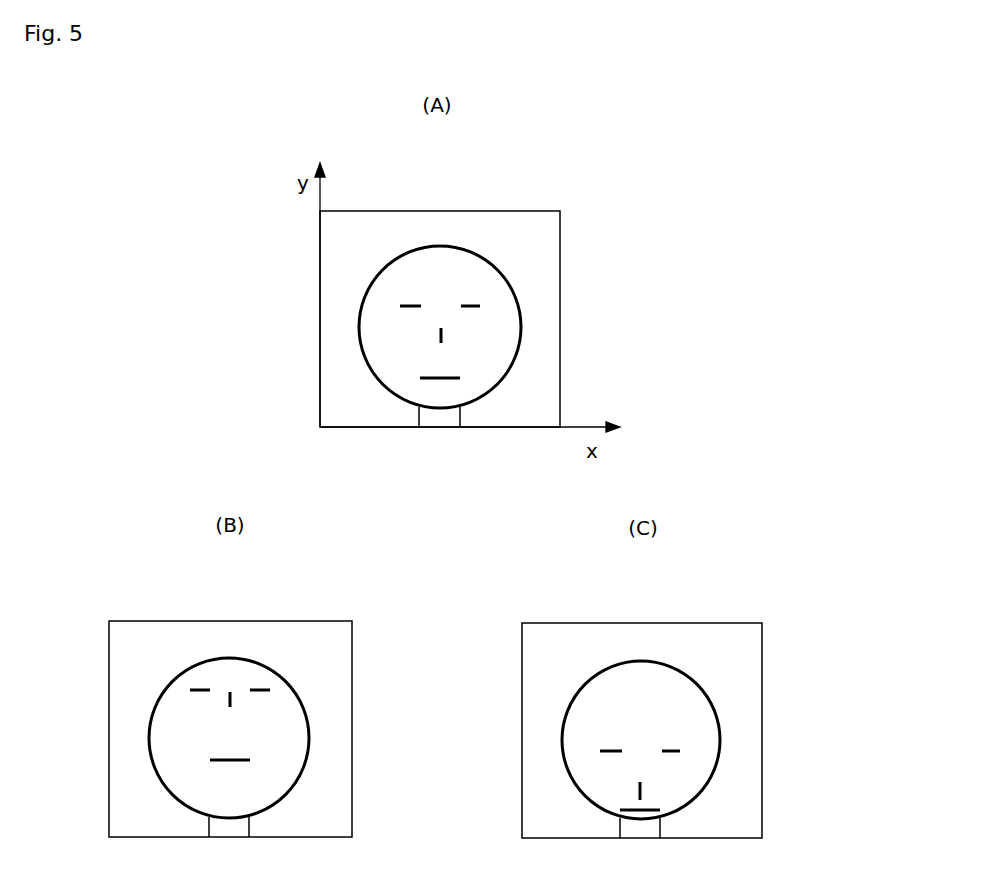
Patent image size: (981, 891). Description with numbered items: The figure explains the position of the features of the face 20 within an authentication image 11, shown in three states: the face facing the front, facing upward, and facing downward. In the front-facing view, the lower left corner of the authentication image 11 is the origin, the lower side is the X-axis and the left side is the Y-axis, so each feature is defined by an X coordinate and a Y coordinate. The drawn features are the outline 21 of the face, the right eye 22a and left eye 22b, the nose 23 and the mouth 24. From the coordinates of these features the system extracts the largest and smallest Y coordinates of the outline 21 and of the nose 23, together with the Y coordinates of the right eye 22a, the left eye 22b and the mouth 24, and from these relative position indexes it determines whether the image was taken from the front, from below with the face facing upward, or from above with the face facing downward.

The authentication image 11 is at (522, 210).
The face 20 is at (415, 250).
The outline 21 is at (495, 268).
The right eye 22a is at (410, 301).
The left eye 22b is at (477, 308).
The nose 23 is at (445, 342).
The mouth 24 is at (428, 382).